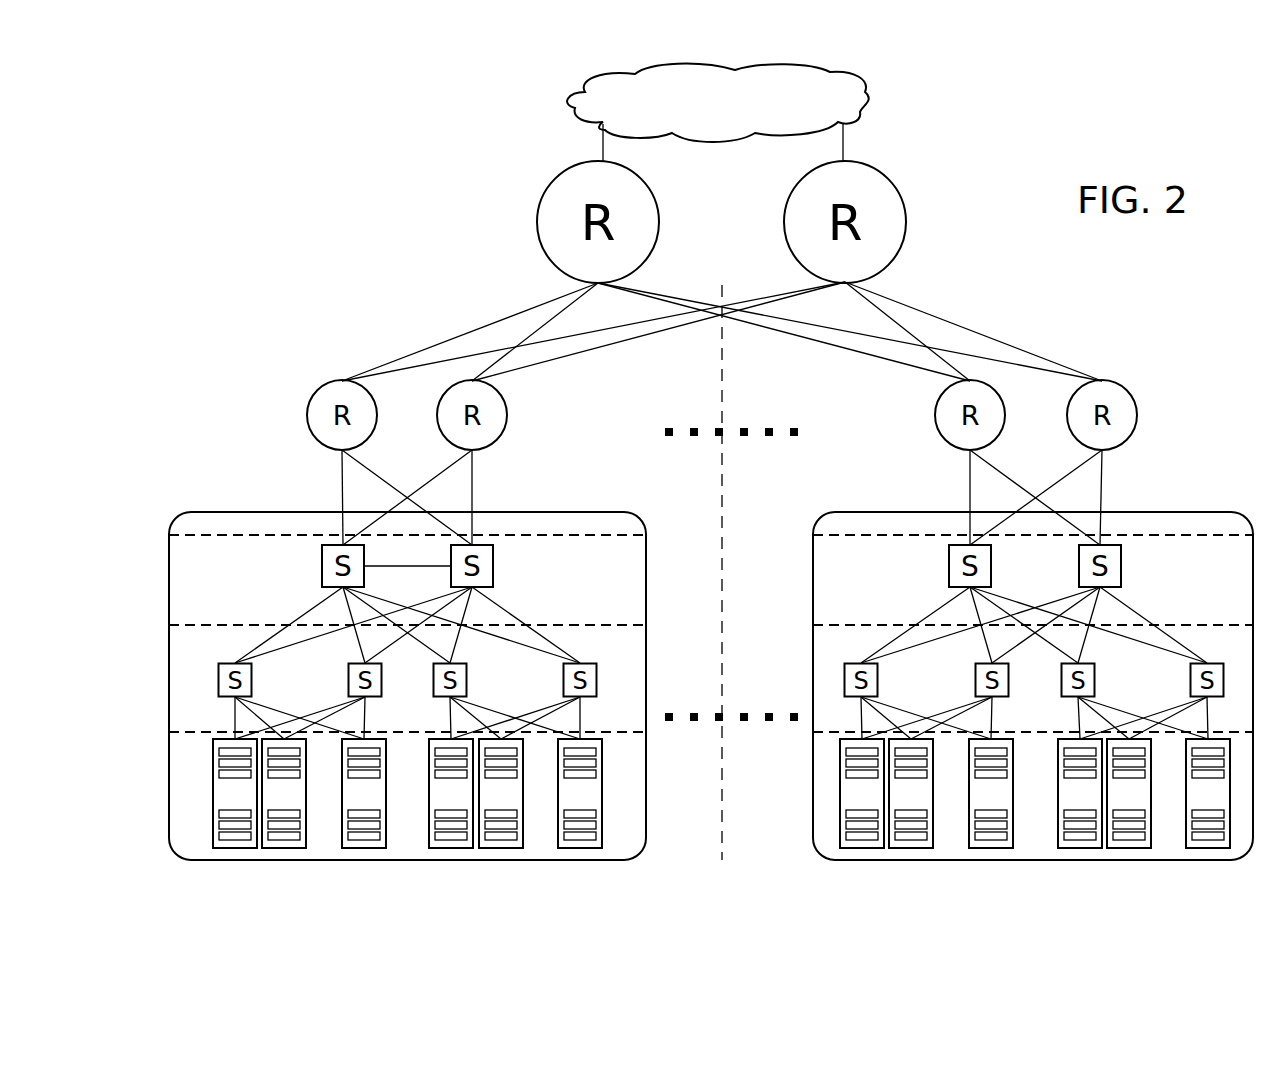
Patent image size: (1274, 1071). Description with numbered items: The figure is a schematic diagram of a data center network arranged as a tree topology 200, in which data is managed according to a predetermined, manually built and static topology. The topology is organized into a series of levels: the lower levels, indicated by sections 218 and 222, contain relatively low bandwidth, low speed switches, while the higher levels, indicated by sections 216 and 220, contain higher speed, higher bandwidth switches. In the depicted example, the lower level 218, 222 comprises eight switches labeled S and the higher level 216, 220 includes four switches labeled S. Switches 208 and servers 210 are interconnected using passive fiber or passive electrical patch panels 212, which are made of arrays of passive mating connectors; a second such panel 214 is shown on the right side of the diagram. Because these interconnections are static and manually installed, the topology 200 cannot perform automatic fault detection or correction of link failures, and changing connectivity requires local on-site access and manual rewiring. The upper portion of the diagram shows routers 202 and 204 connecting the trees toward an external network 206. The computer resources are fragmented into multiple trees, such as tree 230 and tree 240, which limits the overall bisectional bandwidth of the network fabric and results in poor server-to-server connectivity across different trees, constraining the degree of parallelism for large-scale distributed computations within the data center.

The tree topology 200 is at (228, 153).
The router 202 is at (1128, 410).
The core router 204 is at (893, 228).
The external network (cloud) 206 is at (868, 100).
The switches 208 is at (1118, 553).
The servers 210 is at (850, 793).
The patch panel 212 is at (205, 518).
The second pod 214 is at (846, 520).
The higher level section 216 is at (630, 580).
The lower level section 218 is at (630, 657).
The higher level section 220 is at (828, 578).
The lower level section 222 is at (828, 653).
The tree 230 is at (1076, 320).
The tree 240 is at (388, 330).